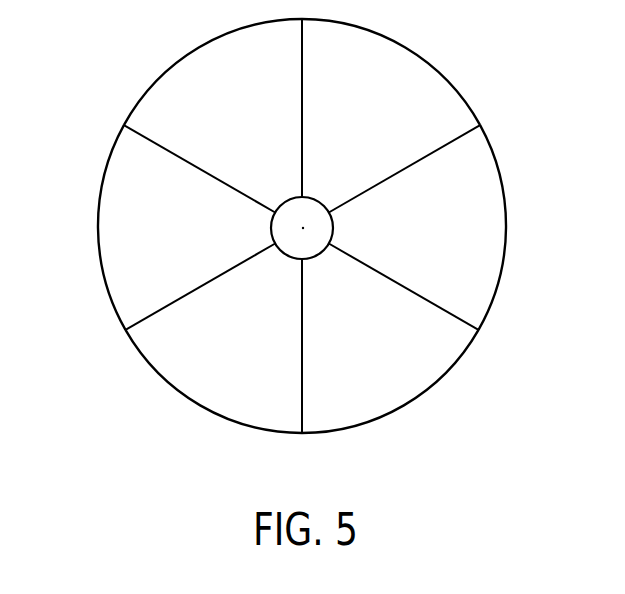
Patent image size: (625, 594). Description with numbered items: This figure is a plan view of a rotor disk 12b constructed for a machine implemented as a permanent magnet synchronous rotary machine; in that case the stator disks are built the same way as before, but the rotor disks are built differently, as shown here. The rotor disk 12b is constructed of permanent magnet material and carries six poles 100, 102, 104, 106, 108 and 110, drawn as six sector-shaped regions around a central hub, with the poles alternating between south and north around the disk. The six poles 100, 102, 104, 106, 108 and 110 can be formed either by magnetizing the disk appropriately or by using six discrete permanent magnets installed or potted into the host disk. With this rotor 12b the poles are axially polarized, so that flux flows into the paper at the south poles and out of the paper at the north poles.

The rotor disk 12b is at (116, 141).
The pole 100 is at (211, 40).
The pole 102 is at (413, 52).
The pole 104 is at (504, 192).
The pole 106 is at (421, 396).
The pole 108 is at (200, 405).
The pole 110 is at (99, 250).